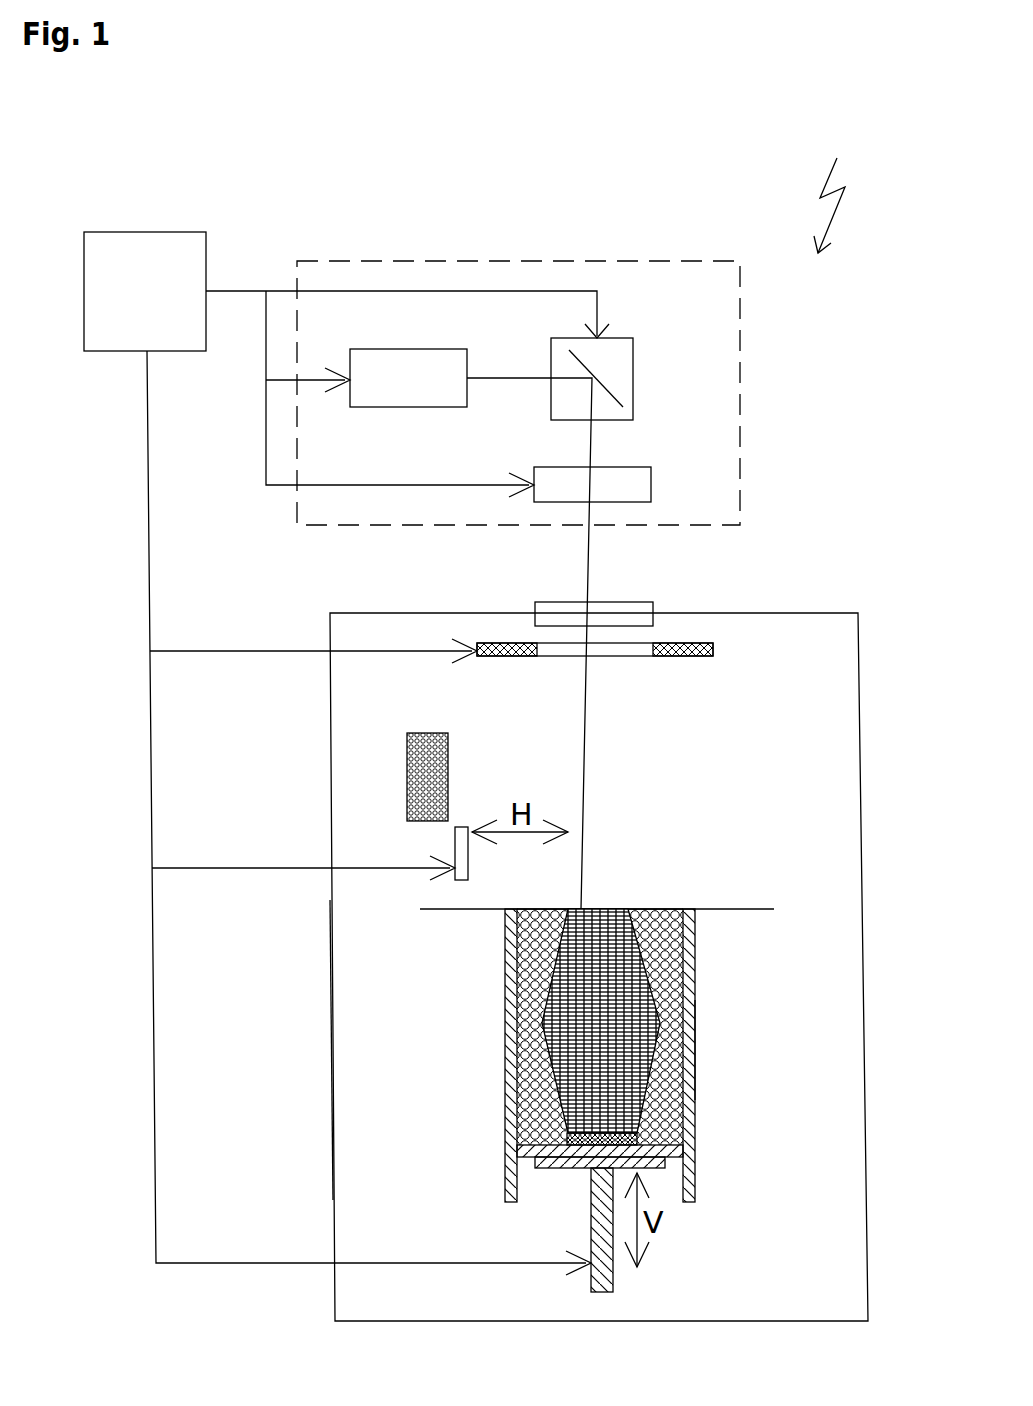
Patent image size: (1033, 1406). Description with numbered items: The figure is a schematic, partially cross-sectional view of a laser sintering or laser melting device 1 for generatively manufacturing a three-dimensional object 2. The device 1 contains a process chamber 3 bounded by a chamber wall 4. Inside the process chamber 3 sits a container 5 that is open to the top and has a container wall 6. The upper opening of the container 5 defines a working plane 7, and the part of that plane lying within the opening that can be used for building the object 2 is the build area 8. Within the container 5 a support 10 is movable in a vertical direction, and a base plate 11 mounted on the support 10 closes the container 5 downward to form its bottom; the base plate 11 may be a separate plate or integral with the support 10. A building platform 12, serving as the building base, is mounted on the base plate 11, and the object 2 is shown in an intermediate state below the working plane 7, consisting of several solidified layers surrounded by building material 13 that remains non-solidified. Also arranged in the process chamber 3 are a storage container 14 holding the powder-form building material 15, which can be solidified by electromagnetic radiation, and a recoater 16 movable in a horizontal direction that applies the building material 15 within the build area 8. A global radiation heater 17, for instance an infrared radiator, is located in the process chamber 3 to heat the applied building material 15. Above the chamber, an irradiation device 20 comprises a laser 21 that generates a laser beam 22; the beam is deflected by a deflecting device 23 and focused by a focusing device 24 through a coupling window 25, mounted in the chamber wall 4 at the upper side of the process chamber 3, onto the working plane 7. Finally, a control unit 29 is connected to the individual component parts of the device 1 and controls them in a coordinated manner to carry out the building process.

The laser sintering or laser melting device 1 is at (835, 189).
The object 2 is at (620, 965).
The process chamber 3 is at (777, 648).
The chamber wall 4 is at (333, 1110).
The container 5 is at (700, 1115).
The container wall 6 is at (688, 1053).
The working plane 7 is at (745, 908).
The build area 8 is at (655, 908).
The support 10 is at (578, 1165).
The base plate 11 is at (540, 1158).
The building platform 12 is at (565, 1136).
The building material remaining non-solidified 13 is at (525, 953).
The storage container 14 is at (425, 732).
The building material 15 is at (440, 775).
The recoater 16 is at (455, 840).
The global radiation heater 17 is at (502, 642).
The irradiation device 20 is at (740, 367).
The laser 21 is at (408, 403).
The laser beam 22 is at (490, 377).
The deflecting device 23 is at (620, 348).
The focusing device 24 is at (623, 477).
The coupling window 25 is at (630, 613).
The control unit 29 is at (346, 753).